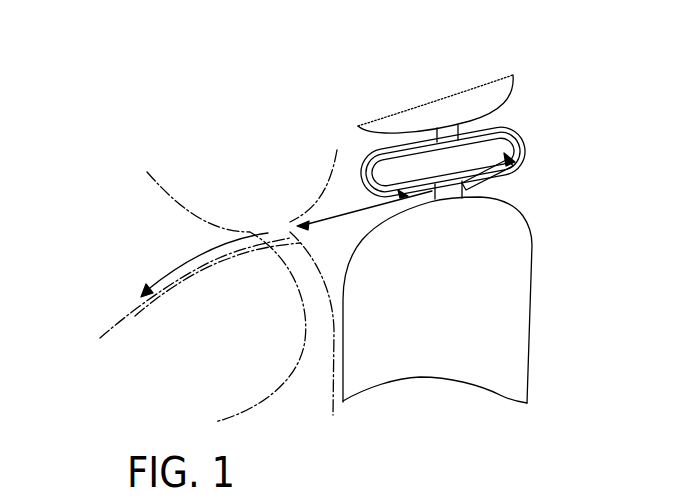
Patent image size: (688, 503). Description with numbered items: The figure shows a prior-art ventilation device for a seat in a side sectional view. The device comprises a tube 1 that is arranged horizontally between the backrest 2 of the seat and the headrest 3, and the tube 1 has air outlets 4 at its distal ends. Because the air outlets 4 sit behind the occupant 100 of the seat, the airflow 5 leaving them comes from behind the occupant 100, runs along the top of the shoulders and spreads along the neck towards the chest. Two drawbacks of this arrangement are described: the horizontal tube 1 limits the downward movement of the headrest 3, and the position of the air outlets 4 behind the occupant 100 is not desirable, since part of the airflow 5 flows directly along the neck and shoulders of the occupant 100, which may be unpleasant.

The tube 1 is at (517, 140).
The backrest 2 is at (510, 322).
The headrest 3 is at (453, 110).
The air outlets 4 is at (476, 180).
The airflow 5 is at (162, 260).
The occupant 100 is at (137, 332).